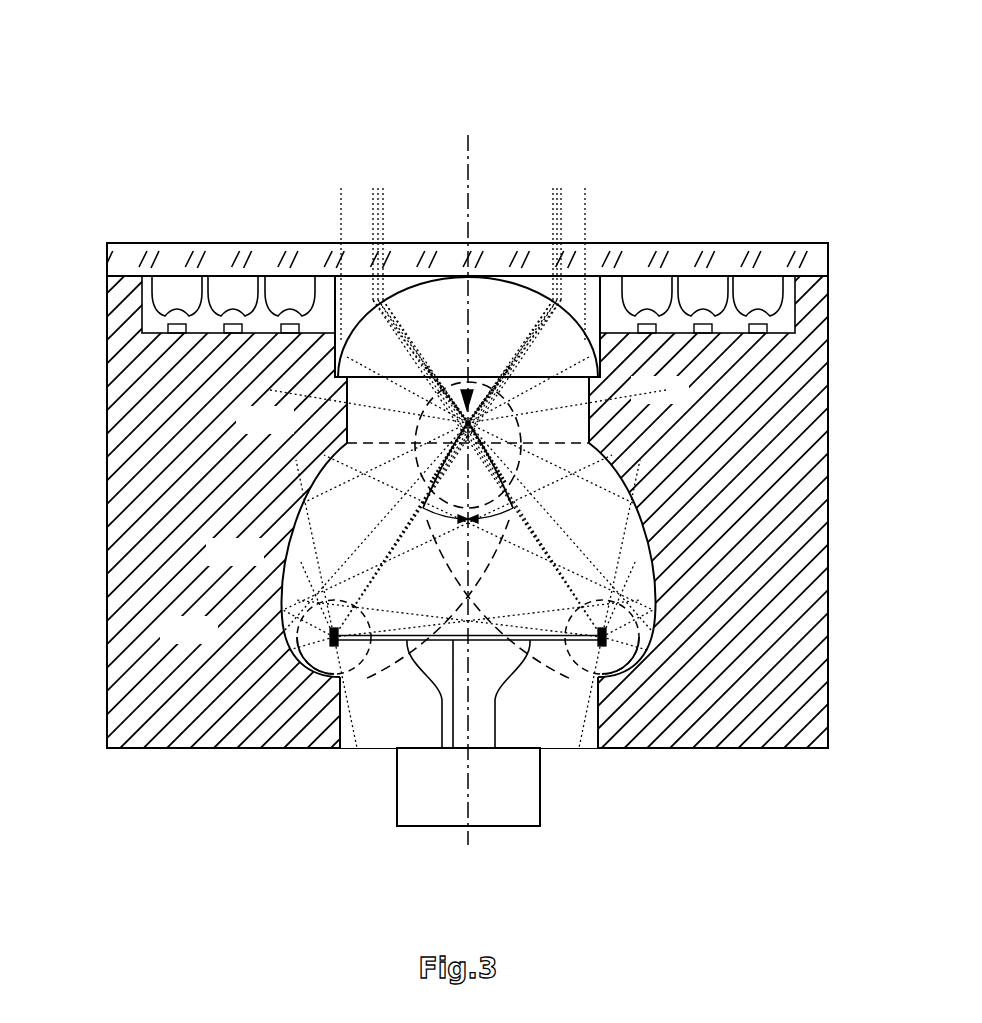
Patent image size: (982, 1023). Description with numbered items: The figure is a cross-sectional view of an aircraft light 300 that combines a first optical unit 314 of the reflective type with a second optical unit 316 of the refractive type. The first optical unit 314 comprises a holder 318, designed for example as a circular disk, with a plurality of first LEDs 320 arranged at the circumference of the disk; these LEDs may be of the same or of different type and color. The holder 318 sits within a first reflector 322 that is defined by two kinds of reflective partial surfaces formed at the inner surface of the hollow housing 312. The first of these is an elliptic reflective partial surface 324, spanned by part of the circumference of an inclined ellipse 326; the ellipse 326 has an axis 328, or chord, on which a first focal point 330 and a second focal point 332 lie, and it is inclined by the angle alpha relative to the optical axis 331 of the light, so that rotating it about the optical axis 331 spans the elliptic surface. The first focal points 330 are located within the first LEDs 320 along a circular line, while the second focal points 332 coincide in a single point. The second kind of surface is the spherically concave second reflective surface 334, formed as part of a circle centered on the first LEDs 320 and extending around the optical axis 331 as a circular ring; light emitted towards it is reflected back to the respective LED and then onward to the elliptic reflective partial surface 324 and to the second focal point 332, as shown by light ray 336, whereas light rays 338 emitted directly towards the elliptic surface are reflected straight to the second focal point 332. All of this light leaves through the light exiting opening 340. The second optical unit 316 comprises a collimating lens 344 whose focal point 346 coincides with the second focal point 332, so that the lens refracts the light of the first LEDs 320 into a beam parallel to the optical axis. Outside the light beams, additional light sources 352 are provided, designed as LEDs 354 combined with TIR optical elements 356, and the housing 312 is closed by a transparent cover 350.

The light 300 is at (106, 133).
The hollow housing 312 is at (152, 495).
The first optical unit 314 is at (690, 527).
The second optical unit 316 is at (633, 217).
The holder 318 is at (453, 748).
The first LEDs 320 is at (347, 614).
The first reflector 322 is at (610, 442).
The elliptic reflective partial surface 324 is at (300, 518).
The ellipse 326 is at (350, 430).
The axis 328 is at (385, 555).
The first focal point 330 is at (283, 650).
The optical axis 331 is at (468, 180).
The second focal point 332 is at (421, 510).
The second reflective surface 334 is at (333, 683).
The light ray 336 is at (625, 438).
The light rays 338 is at (540, 352).
The light exiting opening 340 is at (575, 355).
The collimating lens 344 is at (503, 320).
The focal point 346 is at (465, 392).
The transparent cover 350 is at (680, 262).
The additional light sources 352 is at (227, 220).
The LEDs 354 is at (175, 330).
The TIR optical elements 356 is at (178, 292).